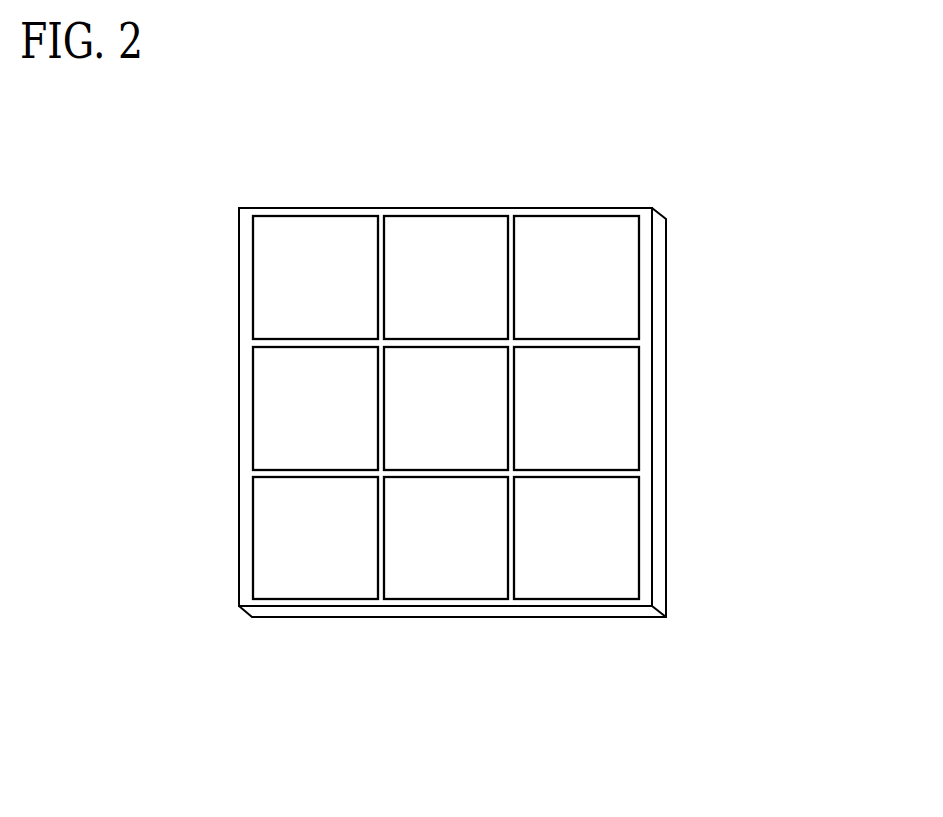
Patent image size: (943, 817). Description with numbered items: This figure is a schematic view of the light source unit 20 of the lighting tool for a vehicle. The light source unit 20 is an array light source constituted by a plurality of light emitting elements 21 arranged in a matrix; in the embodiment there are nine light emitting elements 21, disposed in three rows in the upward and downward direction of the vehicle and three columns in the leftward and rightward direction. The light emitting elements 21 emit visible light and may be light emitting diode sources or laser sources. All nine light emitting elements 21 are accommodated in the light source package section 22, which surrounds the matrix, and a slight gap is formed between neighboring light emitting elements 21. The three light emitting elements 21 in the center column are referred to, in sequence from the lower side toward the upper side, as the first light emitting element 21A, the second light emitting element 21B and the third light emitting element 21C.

The light source unit 20 is at (494, 477).
The light emitting element 21 is at (466, 481).
The first light emitting element 21A is at (438, 552).
The second light emitting element 21B is at (433, 412).
The third light emitting element 21C is at (440, 268).
The light source package section 22 is at (658, 600).